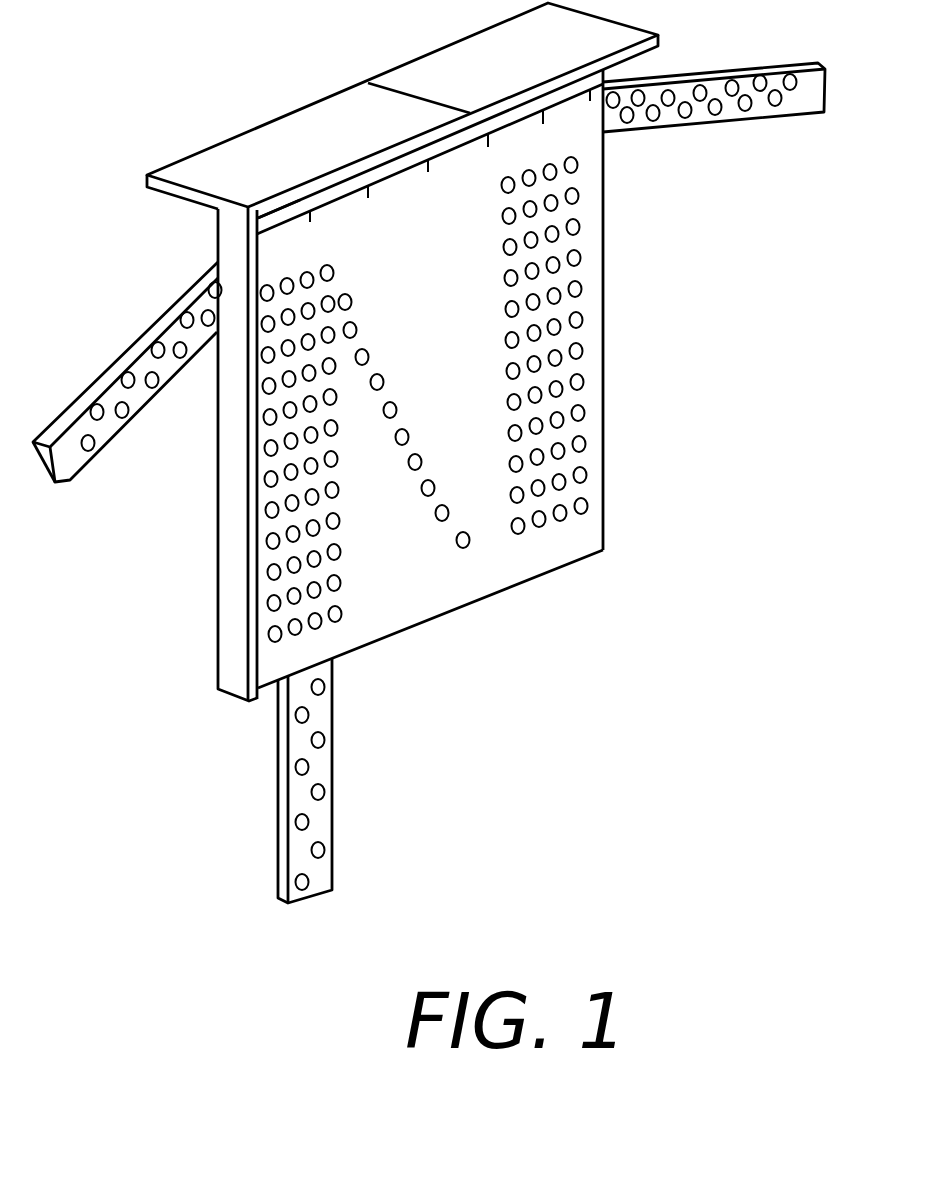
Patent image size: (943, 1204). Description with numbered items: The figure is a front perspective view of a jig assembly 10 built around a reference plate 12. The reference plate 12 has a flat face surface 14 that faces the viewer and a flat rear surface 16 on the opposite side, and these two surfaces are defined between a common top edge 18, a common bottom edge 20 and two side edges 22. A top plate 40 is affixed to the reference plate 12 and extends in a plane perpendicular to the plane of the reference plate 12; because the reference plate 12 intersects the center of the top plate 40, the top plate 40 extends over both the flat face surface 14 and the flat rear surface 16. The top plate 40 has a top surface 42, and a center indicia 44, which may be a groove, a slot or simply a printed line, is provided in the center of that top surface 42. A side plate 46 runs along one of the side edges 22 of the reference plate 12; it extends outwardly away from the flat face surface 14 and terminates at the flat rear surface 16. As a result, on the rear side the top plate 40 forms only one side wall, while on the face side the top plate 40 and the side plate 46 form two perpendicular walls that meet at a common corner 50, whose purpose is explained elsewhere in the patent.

The jig assembly 10 is at (175, 110).
The reference plate 12 is at (435, 601).
The flat face surface 14 is at (497, 572).
The flat rear surface 16 is at (215, 573).
The common top edge 18 is at (510, 110).
The common bottom edge 20 is at (568, 565).
The side edges 22 is at (603, 302).
The top plate 40 is at (628, 24).
The top surface 42 is at (465, 67).
The center indicia 44 is at (403, 95).
The side plate 46 is at (228, 503).
The common corner 50 is at (268, 218).